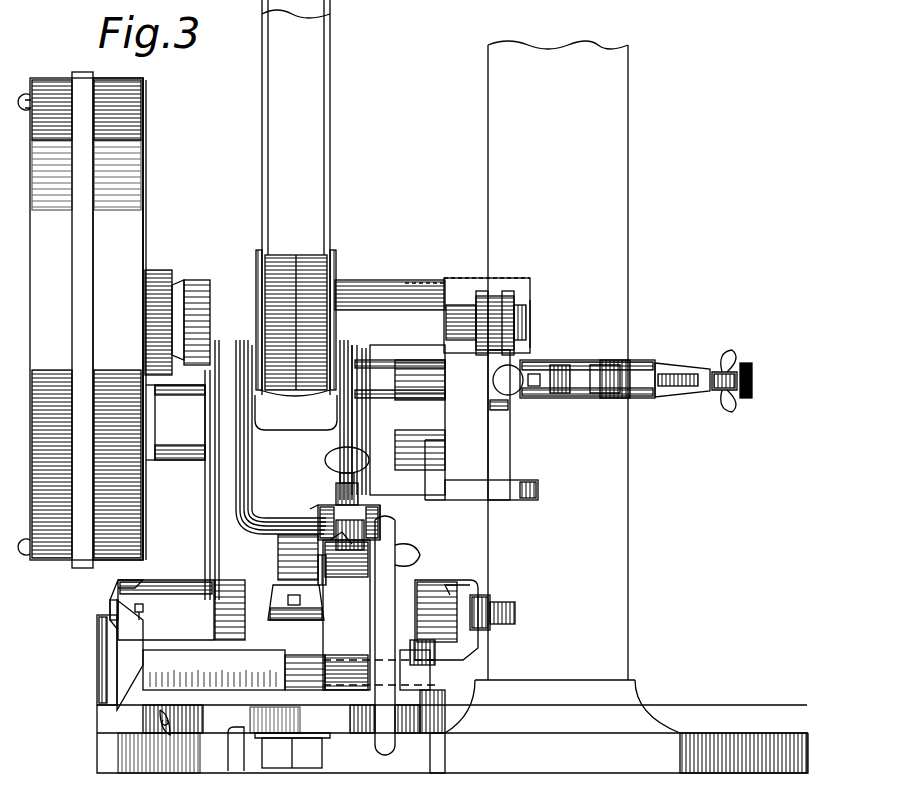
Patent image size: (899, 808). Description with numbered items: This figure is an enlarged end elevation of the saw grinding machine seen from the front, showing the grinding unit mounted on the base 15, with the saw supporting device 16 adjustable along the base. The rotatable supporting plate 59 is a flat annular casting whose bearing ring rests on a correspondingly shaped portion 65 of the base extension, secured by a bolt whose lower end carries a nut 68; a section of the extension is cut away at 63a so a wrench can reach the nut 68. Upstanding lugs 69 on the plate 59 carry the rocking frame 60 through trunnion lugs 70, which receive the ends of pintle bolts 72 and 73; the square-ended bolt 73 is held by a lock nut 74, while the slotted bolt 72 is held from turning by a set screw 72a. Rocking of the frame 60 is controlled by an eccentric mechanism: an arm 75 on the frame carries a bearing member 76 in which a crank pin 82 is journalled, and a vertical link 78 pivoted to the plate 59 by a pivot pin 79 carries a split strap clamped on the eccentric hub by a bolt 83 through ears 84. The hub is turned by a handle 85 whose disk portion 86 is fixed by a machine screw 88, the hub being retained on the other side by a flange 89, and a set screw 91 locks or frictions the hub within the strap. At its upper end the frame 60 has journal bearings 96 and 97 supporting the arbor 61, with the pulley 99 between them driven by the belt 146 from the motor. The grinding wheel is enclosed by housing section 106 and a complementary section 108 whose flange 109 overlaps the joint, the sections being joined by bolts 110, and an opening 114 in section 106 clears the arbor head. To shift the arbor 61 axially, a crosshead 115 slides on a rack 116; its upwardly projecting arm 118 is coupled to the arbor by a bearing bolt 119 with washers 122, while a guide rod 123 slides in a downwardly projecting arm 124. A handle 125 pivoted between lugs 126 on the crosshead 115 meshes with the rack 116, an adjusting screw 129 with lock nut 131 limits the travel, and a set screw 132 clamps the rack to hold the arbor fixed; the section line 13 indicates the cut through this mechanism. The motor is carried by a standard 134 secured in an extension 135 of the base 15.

The section line 13 is at (348, 412).
The supporting frame or base 15 is at (97, 630).
The saw supporting device 16 is at (158, 780).
The rotatable supporting plate or turn table 59 is at (145, 660).
The rocking frame or support 60 is at (289, 462).
The arbor 61 is at (455, 300).
The cut away section 63a is at (427, 750).
The correspondingly shaped portion 65 is at (452, 731).
The nut 68 is at (322, 752).
The upstanding lugs or bosses 69 is at (118, 582).
The trunnion lugs 70 is at (177, 580).
The pintle bolt 72 is at (110, 606).
The set screw 72a is at (143, 624).
The pintle bolt 73 is at (495, 628).
The lock nut 74 is at (490, 605).
The arm or projection 75 is at (280, 599).
The bearing member 76 is at (278, 549).
The link 78 is at (346, 615).
The pivot pin 79 is at (348, 660).
The crank pin 82 is at (295, 667).
The bolt 83 is at (365, 515).
The lugs or ears 84 is at (405, 578).
The handle 85 is at (382, 615).
The disk portion 86 is at (392, 528).
The machine screw 88 is at (408, 556).
The collar or flange 89 is at (306, 508).
The set screw 91 is at (363, 452).
The journal bearing 96 is at (390, 285).
The journal bearing 97 is at (215, 285).
The pulley 99 is at (338, 275).
The housing section 106 is at (145, 228).
The complementary housing section 108 is at (30, 262).
The flange 109 is at (86, 280).
The bolts 110 is at (26, 92).
The opening 114 is at (160, 270).
The crosshead member 115 is at (640, 362).
The rack element 116 is at (460, 400).
The upwardly projecting arm 118 is at (515, 292).
The threaded bearing bolt 119 is at (526, 323).
The washers 122 is at (488, 298).
The rod 123 is at (518, 484).
The downwardly projecting arm 124 is at (510, 425).
The handle 125 is at (595, 398).
The lugs 126 is at (525, 366).
The adjusting screw 129 is at (670, 368).
The lock nut 131 is at (715, 410).
The set screw 132 is at (520, 404).
The standard 134 is at (628, 164).
The extension 135 is at (708, 733).
The belt 146 is at (330, 150).